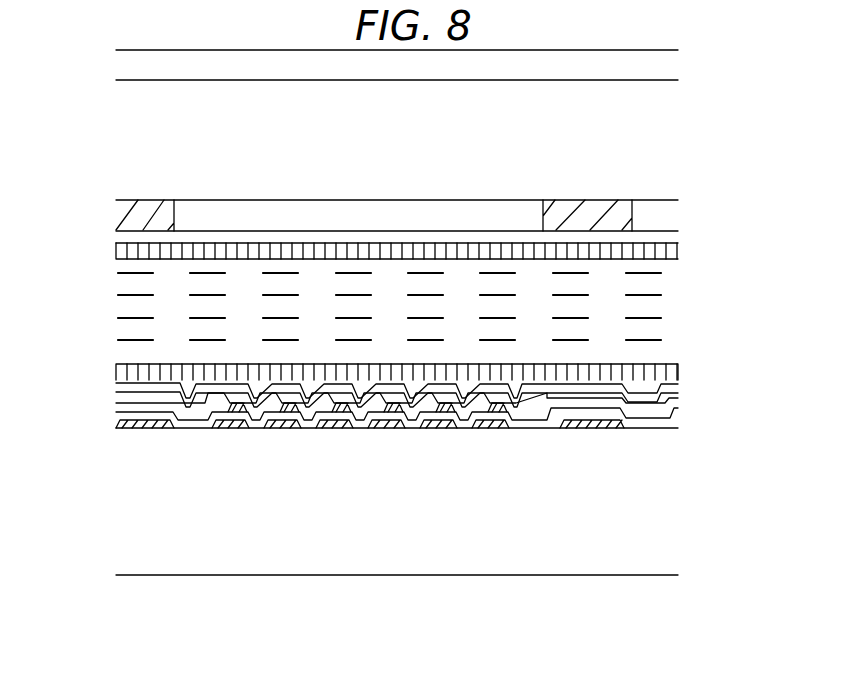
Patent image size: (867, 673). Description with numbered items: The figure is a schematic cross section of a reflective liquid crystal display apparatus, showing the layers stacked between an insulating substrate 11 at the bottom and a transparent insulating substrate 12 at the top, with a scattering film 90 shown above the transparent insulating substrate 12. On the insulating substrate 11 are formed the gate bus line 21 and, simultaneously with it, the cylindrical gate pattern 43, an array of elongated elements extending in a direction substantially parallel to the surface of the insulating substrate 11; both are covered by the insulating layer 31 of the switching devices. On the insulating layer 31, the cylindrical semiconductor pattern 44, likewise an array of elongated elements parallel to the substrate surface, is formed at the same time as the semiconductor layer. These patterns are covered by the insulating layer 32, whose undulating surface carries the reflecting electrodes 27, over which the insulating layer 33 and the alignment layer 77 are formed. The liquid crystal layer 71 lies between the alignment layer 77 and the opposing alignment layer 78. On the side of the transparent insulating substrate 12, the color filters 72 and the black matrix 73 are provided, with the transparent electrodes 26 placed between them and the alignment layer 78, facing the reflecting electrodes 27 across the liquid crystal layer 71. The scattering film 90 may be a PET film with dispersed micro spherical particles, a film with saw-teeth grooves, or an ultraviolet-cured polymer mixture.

The scattering film 90 is at (656, 62).
The transparent insulating substrate 12 is at (142, 146).
The color filters 72 is at (287, 220).
The black matrix 73 is at (627, 210).
The transparent electrodes 26 is at (128, 242).
The alignment layer 78 is at (663, 248).
The liquid crystal layer 71 is at (133, 326).
The alignment layer 77 is at (645, 362).
The insulating layer 33 is at (585, 390).
The insulating layer 32 is at (145, 405).
The reflecting electrodes 27 is at (680, 405).
The insulating layer 31 is at (252, 428).
The cylindrical gate pattern 43 is at (384, 428).
The cylindrical semiconductor pattern 44 is at (455, 428).
The gate bus lines 21 is at (580, 428).
The insulating substrate 11 is at (667, 496).